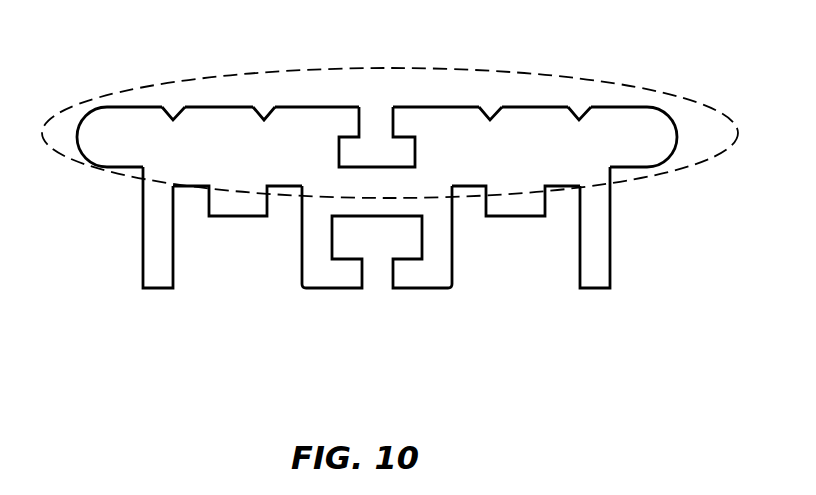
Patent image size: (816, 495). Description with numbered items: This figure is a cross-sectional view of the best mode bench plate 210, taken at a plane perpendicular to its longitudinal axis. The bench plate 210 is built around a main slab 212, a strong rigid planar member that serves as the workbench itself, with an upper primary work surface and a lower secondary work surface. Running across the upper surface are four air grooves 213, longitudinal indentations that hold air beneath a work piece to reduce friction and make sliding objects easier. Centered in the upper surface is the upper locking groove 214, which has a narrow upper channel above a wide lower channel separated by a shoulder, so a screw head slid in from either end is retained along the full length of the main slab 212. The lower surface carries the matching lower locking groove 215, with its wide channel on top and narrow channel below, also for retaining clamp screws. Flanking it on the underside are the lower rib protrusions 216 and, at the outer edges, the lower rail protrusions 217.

The bench plate 210 is at (377, 356).
The main slab 212 is at (680, 98).
The air groove 213 is at (175, 107).
The upper locking groove 214 is at (382, 150).
The lower locking groove 215 is at (381, 232).
The lower rib protrusion 216 is at (247, 205).
The lower rail protrusion 217 is at (160, 265).